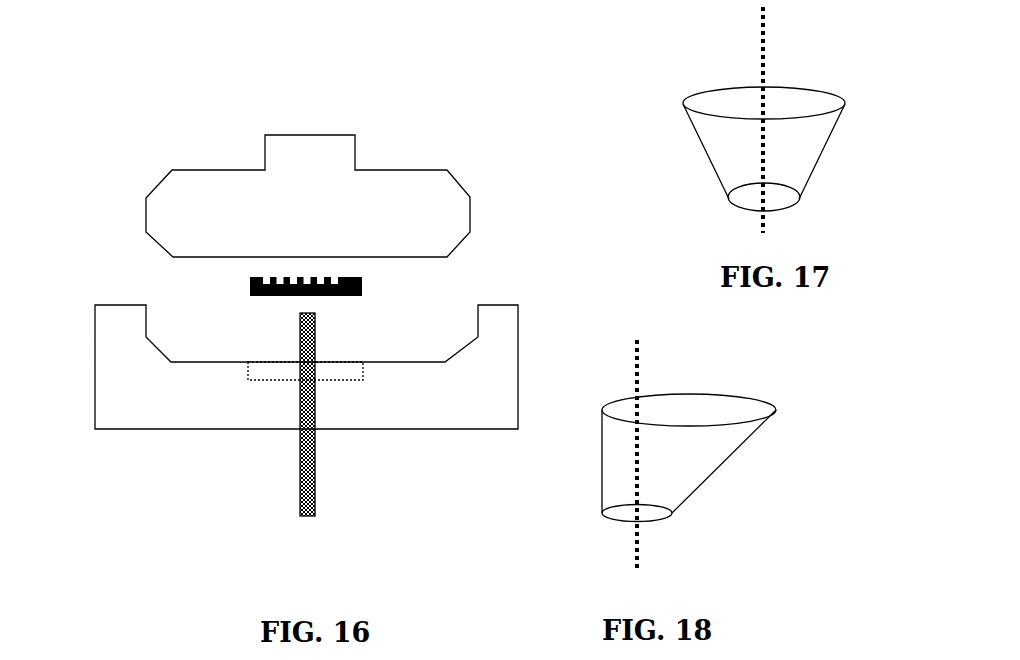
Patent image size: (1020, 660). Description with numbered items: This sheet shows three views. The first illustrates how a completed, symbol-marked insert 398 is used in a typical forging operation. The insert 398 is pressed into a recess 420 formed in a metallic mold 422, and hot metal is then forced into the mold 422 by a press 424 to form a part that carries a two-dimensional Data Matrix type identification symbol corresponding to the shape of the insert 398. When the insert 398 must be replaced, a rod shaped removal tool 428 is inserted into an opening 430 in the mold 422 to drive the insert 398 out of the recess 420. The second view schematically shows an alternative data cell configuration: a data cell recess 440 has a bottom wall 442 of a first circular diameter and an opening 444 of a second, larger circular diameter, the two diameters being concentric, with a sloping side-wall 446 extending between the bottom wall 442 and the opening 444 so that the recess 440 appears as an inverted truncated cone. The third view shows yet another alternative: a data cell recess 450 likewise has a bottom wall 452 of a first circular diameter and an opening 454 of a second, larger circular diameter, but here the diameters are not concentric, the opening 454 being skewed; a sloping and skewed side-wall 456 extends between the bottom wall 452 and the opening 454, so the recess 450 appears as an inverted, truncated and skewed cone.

In FIG. 16, the insert 398 is at (368, 291).
In FIG. 16, the recess 420 is at (333, 375).
In FIG. 16, the metallic mold 422 is at (155, 408).
In FIG. 16, the press 424 is at (198, 205).
In FIG. 16, the rod shaped removal tool 428 is at (322, 482).
In FIG. 16, the opening 430 is at (297, 412).
In FIG. 17, the data cell recess 440 is at (668, 140).
In FIG. 17, the bottom wall 442 is at (750, 197).
In FIG. 17, the opening 444 is at (800, 98).
In FIG. 17, the sloping side-wall 446 is at (819, 140).
In FIG. 18, the data cell recess 450 is at (795, 387).
In FIG. 18, the bottom wall 452 is at (622, 512).
In FIG. 18, the opening 454 is at (620, 408).
In FIG. 18, the sloping and skewed side-wall 456 is at (713, 458).